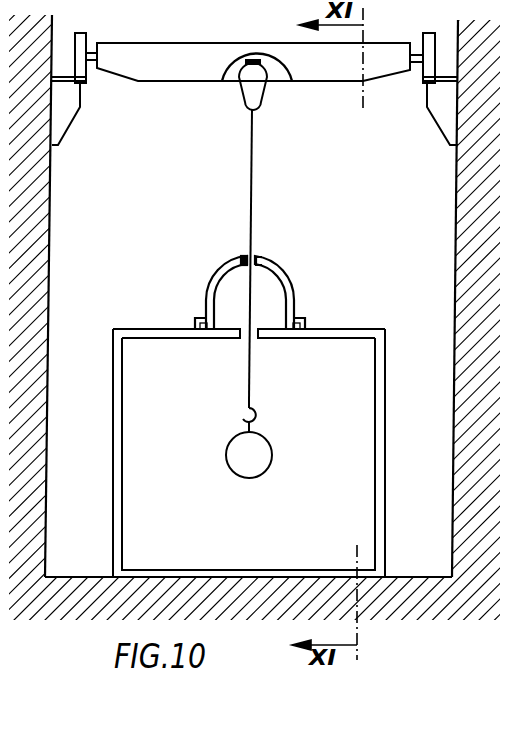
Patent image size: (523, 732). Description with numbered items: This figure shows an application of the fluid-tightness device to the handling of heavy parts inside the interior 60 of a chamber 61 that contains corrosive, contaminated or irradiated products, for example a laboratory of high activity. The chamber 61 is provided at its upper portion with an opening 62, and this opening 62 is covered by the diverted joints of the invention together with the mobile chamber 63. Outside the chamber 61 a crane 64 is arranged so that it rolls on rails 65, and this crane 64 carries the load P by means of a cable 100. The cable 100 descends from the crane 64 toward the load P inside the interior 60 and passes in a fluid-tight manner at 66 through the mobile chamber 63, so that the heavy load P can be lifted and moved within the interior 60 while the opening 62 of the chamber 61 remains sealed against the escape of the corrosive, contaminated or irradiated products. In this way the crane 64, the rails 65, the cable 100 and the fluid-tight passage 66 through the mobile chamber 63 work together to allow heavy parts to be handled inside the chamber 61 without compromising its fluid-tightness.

The crane 64 is at (272, 53).
The rails 65 is at (440, 110).
The cable 100 is at (253, 166).
The fluid-tight passage 66 is at (241, 257).
The mobile chamber 63 is at (268, 263).
The opening 62 is at (253, 332).
The chamber 61 is at (380, 387).
The interior 60 is at (347, 460).
The load P is at (265, 459).